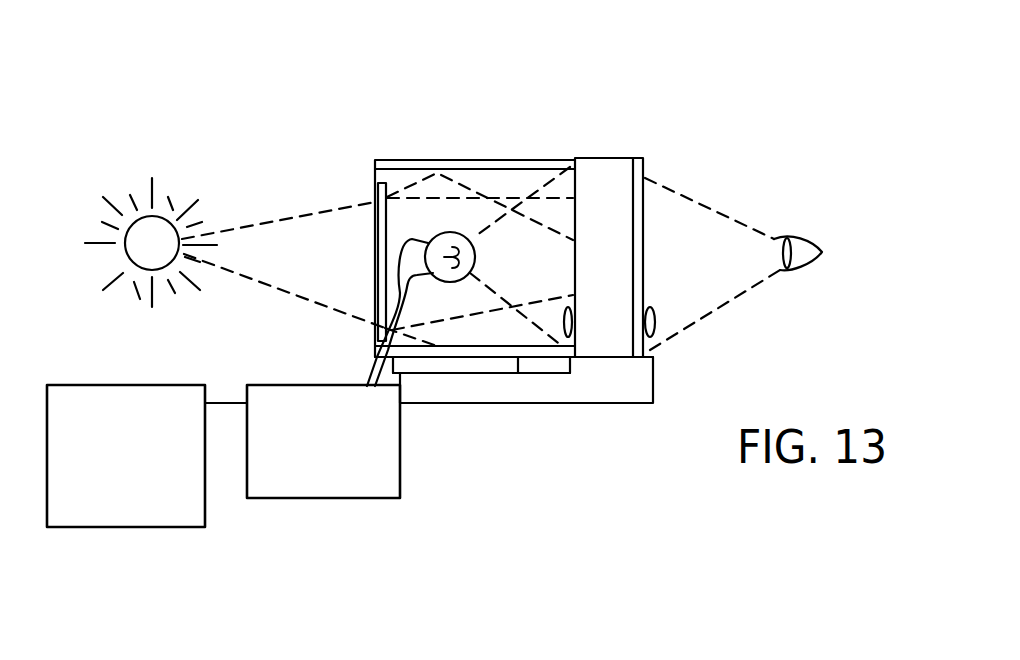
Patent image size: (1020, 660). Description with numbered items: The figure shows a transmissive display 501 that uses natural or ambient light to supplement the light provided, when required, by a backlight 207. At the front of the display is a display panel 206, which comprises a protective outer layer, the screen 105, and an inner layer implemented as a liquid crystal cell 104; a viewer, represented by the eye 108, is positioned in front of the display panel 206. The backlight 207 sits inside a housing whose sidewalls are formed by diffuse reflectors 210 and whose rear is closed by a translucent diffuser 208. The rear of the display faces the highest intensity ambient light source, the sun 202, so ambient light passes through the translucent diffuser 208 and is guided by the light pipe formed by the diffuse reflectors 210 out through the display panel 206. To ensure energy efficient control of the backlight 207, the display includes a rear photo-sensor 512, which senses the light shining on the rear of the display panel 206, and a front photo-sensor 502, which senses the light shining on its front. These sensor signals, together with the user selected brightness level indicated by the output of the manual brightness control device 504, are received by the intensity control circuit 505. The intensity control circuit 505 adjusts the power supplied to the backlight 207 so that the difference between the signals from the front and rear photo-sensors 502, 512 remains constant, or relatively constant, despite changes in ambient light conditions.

The transmissive display 501 is at (753, 98).
The diffuse reflector 210 is at (535, 158).
The translucent diffuser 208 is at (373, 203).
The backlight 207 is at (422, 309).
The display panel 206 is at (642, 155).
The screen 105 is at (645, 181).
The liquid crystal cell 104 is at (625, 359).
The rear photo-sensor 512 is at (565, 318).
The front photo-sensor 502 is at (656, 320).
The sun 202 is at (145, 271).
The eye 108 is at (800, 237).
The manual brightness control device 504 is at (160, 385).
The intensity control circuit 505 is at (401, 487).